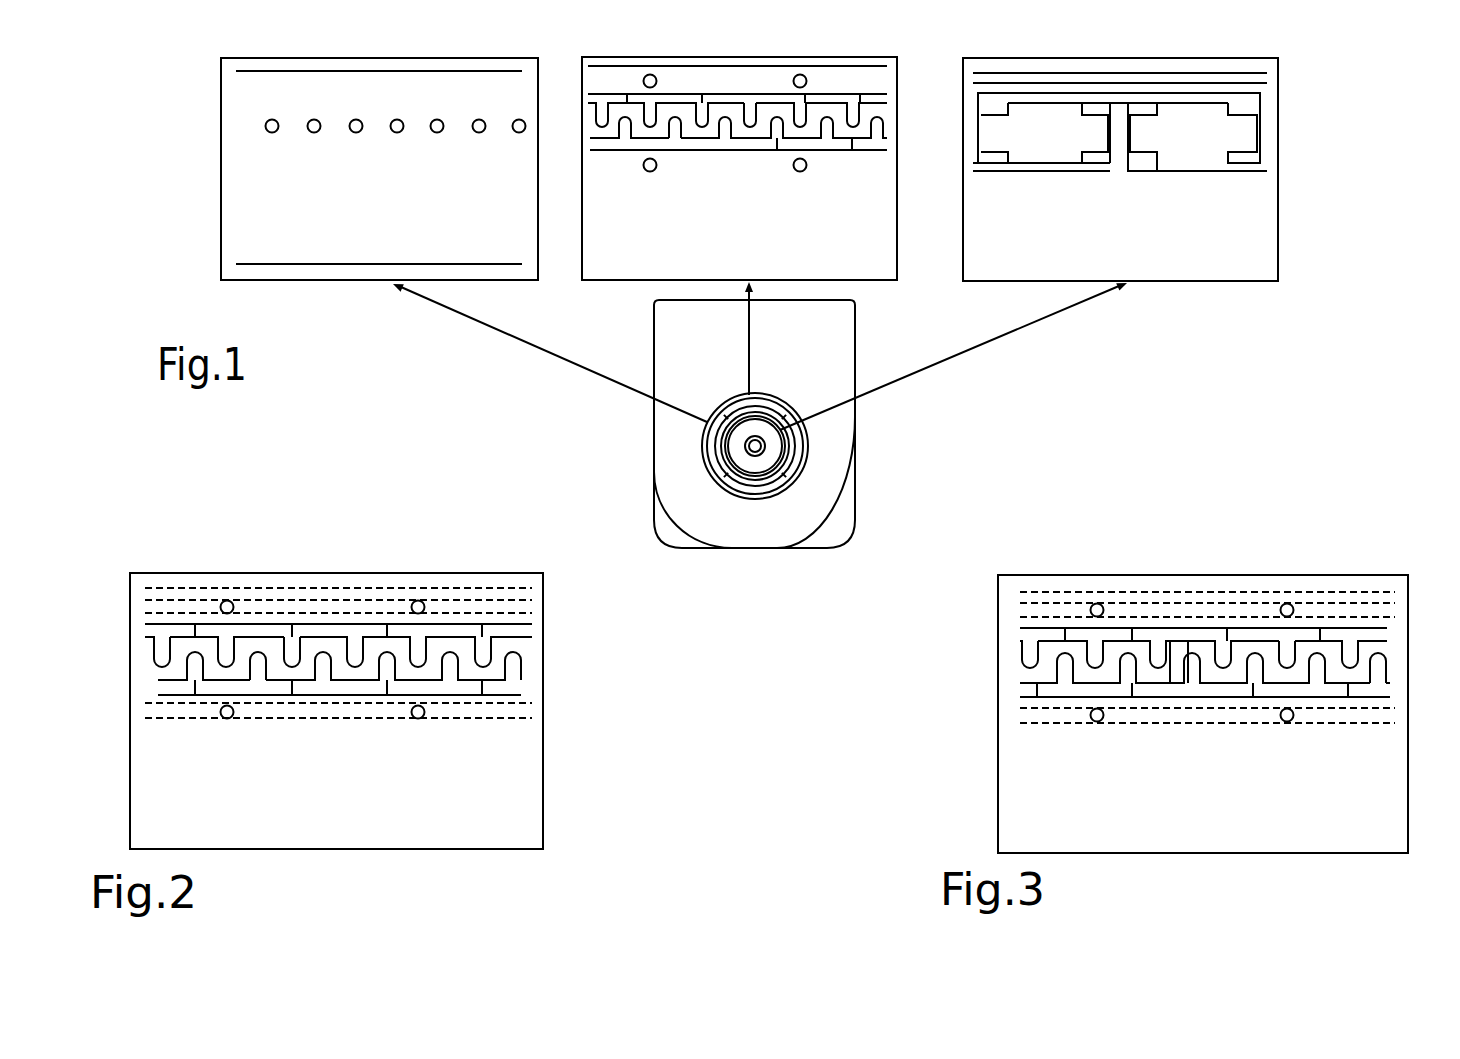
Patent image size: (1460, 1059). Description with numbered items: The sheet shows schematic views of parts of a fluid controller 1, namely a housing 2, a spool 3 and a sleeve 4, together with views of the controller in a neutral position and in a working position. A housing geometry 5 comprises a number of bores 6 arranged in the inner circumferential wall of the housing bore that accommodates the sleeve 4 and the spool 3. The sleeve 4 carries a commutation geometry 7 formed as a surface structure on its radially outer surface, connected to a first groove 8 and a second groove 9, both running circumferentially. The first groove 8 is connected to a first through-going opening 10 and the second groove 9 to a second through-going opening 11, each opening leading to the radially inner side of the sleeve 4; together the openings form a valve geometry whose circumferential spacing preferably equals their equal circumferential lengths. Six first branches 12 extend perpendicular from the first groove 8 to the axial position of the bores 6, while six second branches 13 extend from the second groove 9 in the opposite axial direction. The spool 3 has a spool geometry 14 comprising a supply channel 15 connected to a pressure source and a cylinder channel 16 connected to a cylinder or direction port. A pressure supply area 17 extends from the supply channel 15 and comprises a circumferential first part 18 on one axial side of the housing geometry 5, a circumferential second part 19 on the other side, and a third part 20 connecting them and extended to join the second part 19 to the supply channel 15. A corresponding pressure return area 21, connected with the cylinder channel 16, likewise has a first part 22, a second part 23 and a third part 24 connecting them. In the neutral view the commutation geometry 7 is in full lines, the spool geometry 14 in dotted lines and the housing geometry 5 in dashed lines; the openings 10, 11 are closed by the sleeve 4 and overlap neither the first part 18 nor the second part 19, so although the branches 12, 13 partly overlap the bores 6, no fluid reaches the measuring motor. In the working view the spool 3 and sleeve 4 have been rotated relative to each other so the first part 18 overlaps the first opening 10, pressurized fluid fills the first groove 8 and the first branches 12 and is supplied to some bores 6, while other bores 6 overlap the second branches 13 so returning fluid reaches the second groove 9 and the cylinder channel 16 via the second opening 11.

In FIG. 1, the fluid controller 1 is at (873, 445).
In FIG. 1, the housing 2 is at (322, 71).
In FIG. 1, the spool 3 is at (1122, 71).
In FIG. 1, the sleeve 4 is at (712, 67).
In FIG. 1, the housing geometry 5 is at (240, 126).
In FIG. 1, the bores 6 is at (267, 131).
In FIG. 2, the bores 6 is at (157, 662).
In FIG. 3, the bores 6 is at (1034, 663).
In FIG. 1, the commutation geometry 7 is at (866, 79).
In FIG. 1, the first groove 8 is at (887, 102).
In FIG. 2, the first groove 8 is at (448, 636).
In FIG. 3, the first groove 8 is at (1243, 636).
In FIG. 1, the second groove 9 is at (887, 145).
In FIG. 2, the second groove 9 is at (264, 683).
In FIG. 3, the second groove 9 is at (1092, 689).
In FIG. 1, the first through-going opening 10 is at (642, 102).
In FIG. 2, the first through-going opening 10 is at (252, 630).
In FIG. 3, the first through-going opening 10 is at (1104, 636).
In FIG. 1, the second through-going opening 11 is at (827, 144).
In FIG. 2, the second through-going opening 11 is at (447, 688).
In FIG. 3, the second through-going opening 11 is at (1293, 690).
In FIG. 1, the first branches 12 is at (751, 116).
In FIG. 2, the first branches 12 is at (293, 656).
In FIG. 3, the first branches 12 is at (1287, 652).
In FIG. 1, the second branches 13 is at (677, 125).
In FIG. 2, the second branches 13 is at (261, 669).
In FIG. 3, the second branches 13 is at (1383, 675).
In FIG. 1, the spool geometry 14 is at (1274, 113).
In FIG. 1, the supply channel 15 is at (1253, 177).
In FIG. 2, the supply channel 15 is at (520, 712).
In FIG. 3, the supply channel 15 is at (1368, 717).
In FIG. 1, the cylinder channel 16 is at (1210, 91).
In FIG. 2, the cylinder channel 16 is at (155, 603).
In FIG. 3, the cylinder channel 16 is at (1348, 612).
In FIG. 1, the pressure supply area 17 is at (1153, 130).
In FIG. 1, the first part 18 is at (1088, 102).
In FIG. 3, the first part 18 is at (1172, 630).
In FIG. 1, the second part 19 is at (1141, 165).
In FIG. 1, the third part 20 is at (1118, 134).
In FIG. 1, the pressure return area 21 is at (991, 84).
In FIG. 1, the first part 22 is at (1001, 109).
In FIG. 1, the second part 23 is at (998, 154).
In FIG. 1, the third part 24 is at (972, 140).